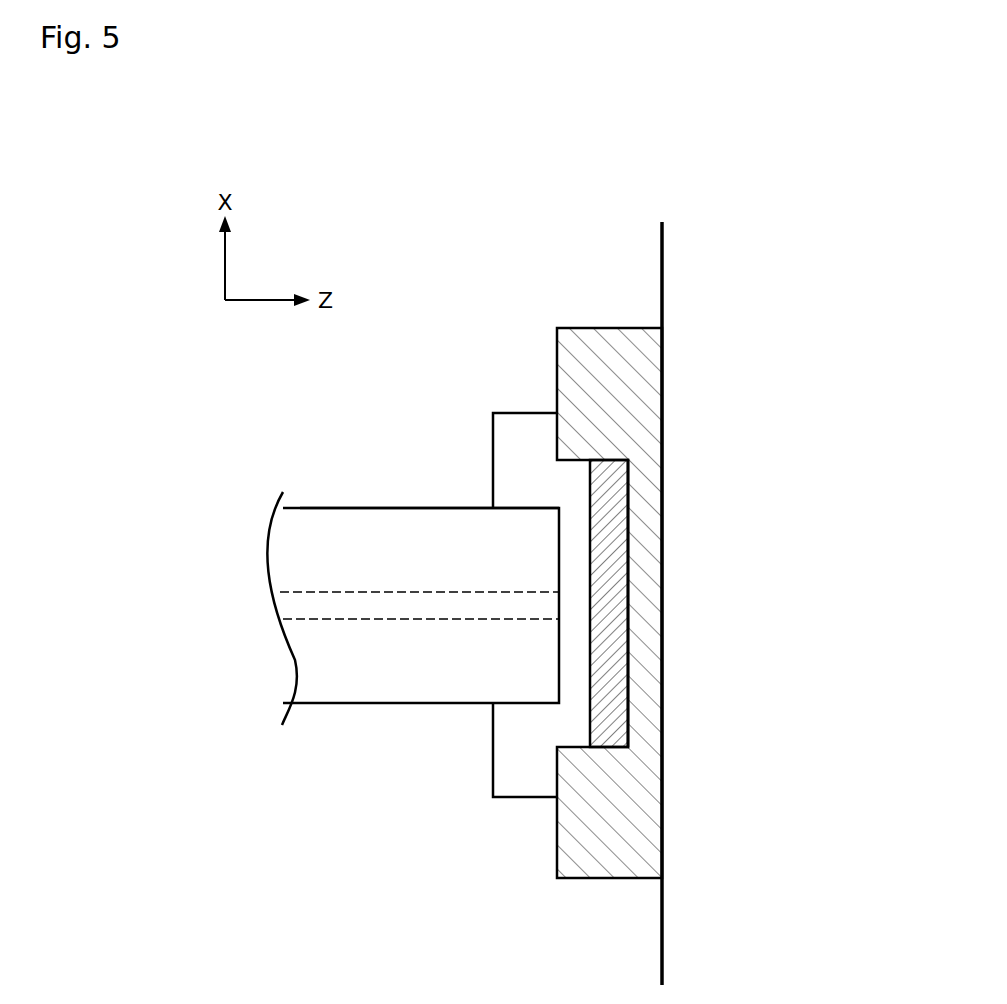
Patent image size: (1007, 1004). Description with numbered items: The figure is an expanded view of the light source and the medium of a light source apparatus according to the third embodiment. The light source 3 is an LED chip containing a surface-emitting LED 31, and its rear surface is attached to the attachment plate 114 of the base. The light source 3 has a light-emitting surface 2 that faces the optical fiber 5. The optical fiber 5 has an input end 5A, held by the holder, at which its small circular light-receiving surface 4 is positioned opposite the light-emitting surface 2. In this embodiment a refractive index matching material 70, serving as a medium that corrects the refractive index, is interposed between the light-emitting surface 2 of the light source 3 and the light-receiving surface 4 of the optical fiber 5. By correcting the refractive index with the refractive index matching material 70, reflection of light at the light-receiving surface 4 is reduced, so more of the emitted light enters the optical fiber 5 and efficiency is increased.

The light-emitting surface 2 is at (584, 668).
The light source 3 is at (607, 328).
The light-receiving surface 4 is at (560, 601).
The optical fiber 5 is at (365, 508).
The input end 5A is at (415, 508).
The LED 31 is at (620, 717).
The refractive index matching material 70 is at (512, 413).
The attachment plate 114 is at (661, 898).